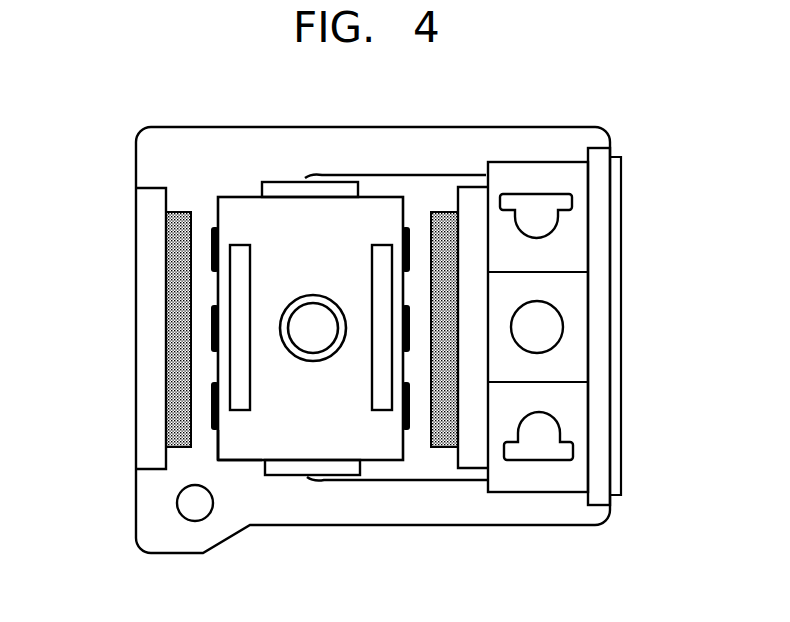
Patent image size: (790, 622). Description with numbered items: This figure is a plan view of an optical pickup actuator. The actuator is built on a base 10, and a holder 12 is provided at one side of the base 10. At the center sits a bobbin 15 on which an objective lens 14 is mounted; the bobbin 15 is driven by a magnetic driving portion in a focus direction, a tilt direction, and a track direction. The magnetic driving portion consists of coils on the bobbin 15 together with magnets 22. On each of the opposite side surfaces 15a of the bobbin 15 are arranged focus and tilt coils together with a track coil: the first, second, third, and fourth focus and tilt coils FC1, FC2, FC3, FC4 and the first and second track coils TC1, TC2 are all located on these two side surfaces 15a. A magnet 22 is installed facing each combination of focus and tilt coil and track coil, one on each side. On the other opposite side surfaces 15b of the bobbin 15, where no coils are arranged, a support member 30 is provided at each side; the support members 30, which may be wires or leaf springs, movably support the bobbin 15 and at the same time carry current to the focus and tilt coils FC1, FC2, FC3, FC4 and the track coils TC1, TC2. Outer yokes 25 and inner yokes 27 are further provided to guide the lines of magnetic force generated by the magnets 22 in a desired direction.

The base 10 is at (354, 533).
The holder 12 is at (538, 482).
The objective lens 14 is at (314, 312).
The bobbin 15 is at (310, 274).
The opposite side surfaces 15a is at (215, 437).
The other opposite side surfaces 15b is at (248, 465).
The magnet 22 is at (170, 232).
The outer yoke 25 is at (143, 207).
The inner yoke 27 is at (240, 250).
The support member 30 is at (345, 182).
The first focus and tilt coil FC1 is at (410, 252).
The second focus and tilt coil FC2 is at (213, 258).
The third focus and tilt coil FC3 is at (410, 412).
The fourth focus and tilt coil FC4 is at (213, 408).
The first track coil TC1 is at (410, 332).
The second track coil TC2 is at (213, 332).